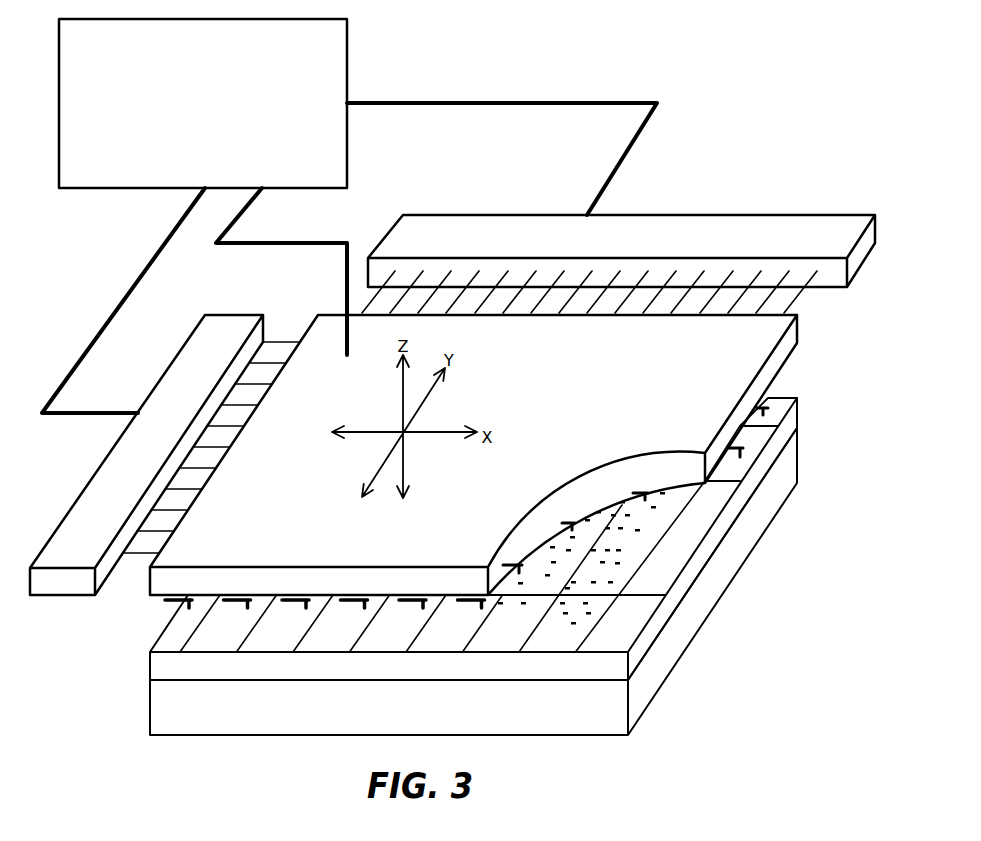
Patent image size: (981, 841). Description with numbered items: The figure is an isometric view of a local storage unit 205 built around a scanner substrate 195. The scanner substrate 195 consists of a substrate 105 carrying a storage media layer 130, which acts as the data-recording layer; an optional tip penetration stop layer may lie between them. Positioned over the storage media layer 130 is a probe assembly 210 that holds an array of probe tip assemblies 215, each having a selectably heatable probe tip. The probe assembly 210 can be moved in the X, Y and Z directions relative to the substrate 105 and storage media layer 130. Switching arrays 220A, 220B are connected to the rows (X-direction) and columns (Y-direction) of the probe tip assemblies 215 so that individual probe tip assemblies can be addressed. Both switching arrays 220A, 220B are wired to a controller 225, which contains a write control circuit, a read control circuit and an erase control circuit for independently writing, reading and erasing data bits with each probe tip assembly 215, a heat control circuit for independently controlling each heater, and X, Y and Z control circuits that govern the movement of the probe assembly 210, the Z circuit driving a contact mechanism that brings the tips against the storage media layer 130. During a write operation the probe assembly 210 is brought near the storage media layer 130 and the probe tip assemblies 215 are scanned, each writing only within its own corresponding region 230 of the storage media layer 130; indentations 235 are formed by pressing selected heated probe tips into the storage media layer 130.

The substrate 105 is at (483, 726).
The storage media layer 130 is at (690, 572).
The scanner substrate 195 is at (84, 691).
The local storage unit 205 is at (748, 137).
The probe assembly 210 is at (645, 400).
The probe tip assemblies 215 is at (525, 563).
The switching array 220A is at (167, 464).
The switching array 220B is at (615, 252).
The controller 225 is at (325, 179).
The region 230 is at (628, 546).
The indentations 235 is at (617, 563).